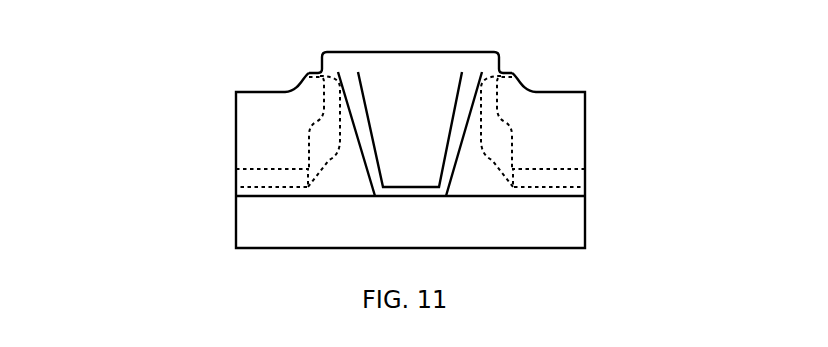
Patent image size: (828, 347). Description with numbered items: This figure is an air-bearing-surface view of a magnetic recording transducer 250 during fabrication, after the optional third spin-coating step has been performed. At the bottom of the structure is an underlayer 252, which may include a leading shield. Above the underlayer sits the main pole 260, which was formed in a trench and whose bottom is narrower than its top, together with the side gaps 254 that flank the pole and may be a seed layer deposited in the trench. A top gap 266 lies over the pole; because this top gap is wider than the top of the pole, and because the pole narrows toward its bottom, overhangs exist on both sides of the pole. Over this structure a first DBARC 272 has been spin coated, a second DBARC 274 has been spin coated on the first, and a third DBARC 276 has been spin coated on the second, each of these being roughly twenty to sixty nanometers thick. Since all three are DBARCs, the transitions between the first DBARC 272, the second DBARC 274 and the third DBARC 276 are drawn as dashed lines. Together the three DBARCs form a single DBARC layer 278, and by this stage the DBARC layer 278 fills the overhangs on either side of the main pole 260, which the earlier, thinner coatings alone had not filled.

The transducer 250 is at (158, 32).
The underlayer 252 is at (410, 222).
The side gap 254 is at (423, 197).
The main pole 260 is at (410, 134).
The top gap 266 is at (517, 71).
The first DBARC 272 is at (258, 188).
The second DBARC 274 is at (307, 148).
The third DBARC 276 is at (270, 92).
The DBARC layer 278 is at (130, 146).